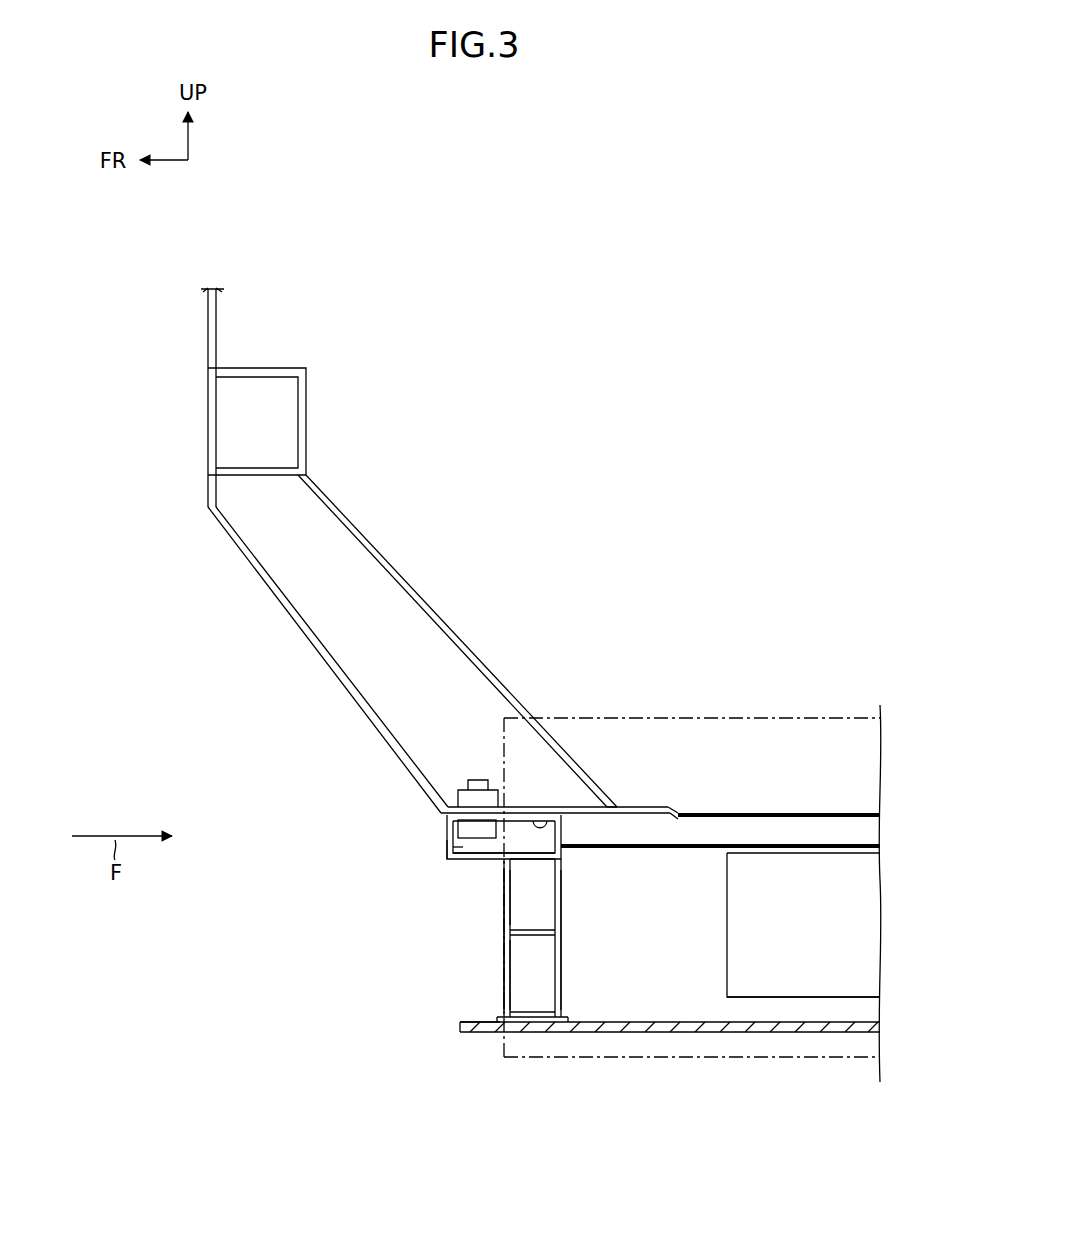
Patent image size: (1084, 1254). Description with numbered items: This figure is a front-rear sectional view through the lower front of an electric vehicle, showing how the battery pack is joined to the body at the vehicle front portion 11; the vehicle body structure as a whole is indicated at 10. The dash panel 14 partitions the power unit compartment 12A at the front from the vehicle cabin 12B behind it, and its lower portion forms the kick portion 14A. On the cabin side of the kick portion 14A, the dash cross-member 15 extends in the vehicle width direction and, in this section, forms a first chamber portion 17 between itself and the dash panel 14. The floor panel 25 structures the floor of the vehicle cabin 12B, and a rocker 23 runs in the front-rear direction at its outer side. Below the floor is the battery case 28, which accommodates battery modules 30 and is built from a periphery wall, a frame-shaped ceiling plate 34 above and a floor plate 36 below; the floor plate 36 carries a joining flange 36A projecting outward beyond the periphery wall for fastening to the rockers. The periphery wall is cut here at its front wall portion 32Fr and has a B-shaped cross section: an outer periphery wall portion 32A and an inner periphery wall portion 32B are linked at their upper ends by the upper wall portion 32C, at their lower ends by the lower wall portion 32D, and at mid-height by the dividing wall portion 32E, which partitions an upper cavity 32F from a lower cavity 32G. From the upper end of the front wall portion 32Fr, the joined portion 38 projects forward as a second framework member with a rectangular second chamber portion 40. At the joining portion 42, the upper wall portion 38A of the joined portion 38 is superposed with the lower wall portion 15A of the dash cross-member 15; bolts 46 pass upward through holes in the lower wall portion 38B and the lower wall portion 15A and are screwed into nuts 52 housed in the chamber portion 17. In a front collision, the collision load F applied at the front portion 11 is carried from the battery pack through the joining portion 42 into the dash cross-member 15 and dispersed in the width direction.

The vehicle body structure (vehicle) 10 is at (164, 975).
The vehicle front portion 11 is at (165, 602).
The power unit compartment 12A is at (92, 721).
The vehicle cabin 12B is at (748, 548).
The dash panel 14 is at (218, 328).
The kick portion 14A is at (364, 537).
The dash cross-member 15 is at (430, 605).
The lower wall portion of the dash cross-member 15A is at (523, 807).
The chamber portion 17 is at (407, 669).
The rocker 23 is at (737, 722).
The floor panel 25 is at (776, 812).
The battery case 28 is at (827, 1005).
The battery module 30 is at (776, 985).
The front wall portion 32Fr is at (479, 951).
The outer periphery wall portion 32A is at (502, 922).
The inner periphery wall portion 32B is at (562, 915).
The upper wall portion 32C is at (538, 859).
The lower wall portion 32D is at (525, 1012).
The dividing wall portion 32E is at (532, 936).
The upper cavity 32F is at (532, 900).
The lower cavity 32G is at (532, 972).
The ceiling plate 34 is at (828, 845).
The floor plate 36 is at (683, 1032).
The joining flange 36A is at (487, 1032).
The joined portion 38 is at (463, 830).
The upper wall portion of the joined portion 38A is at (550, 813).
The lower wall portion of the joined portion 38B is at (520, 850).
The chamber portion 40 is at (447, 848).
The joining portion 42 is at (433, 812).
The bolt 46 is at (463, 847).
The nut 52 is at (462, 792).